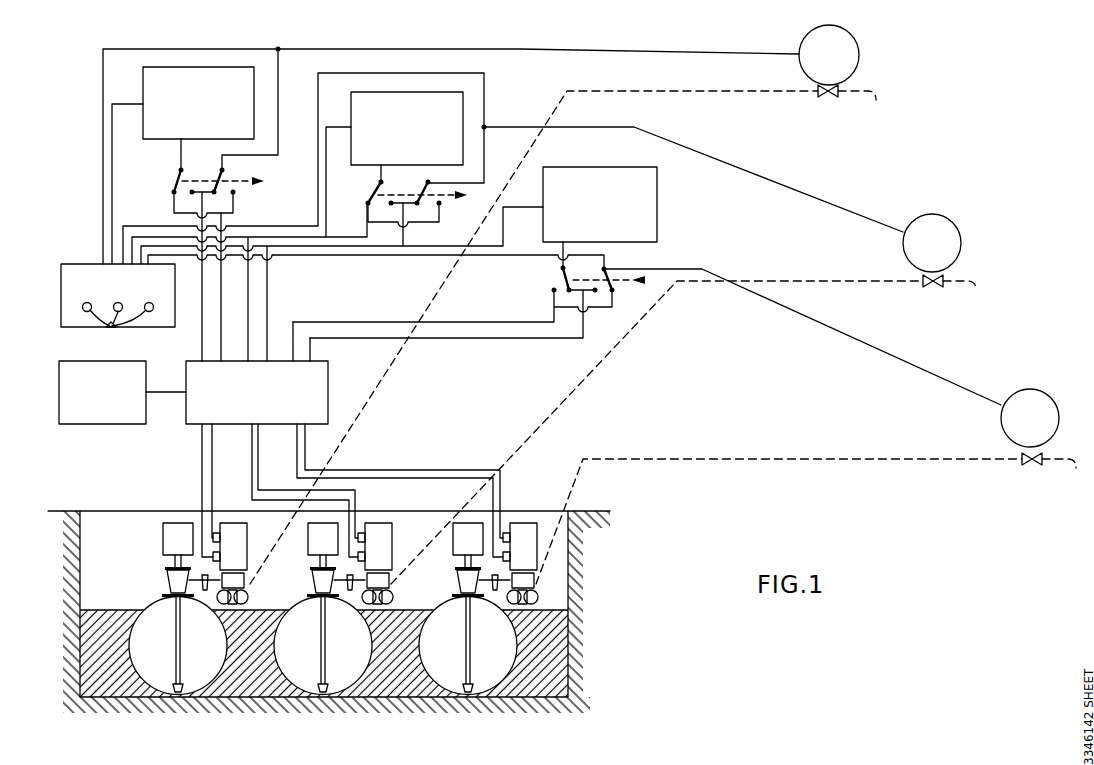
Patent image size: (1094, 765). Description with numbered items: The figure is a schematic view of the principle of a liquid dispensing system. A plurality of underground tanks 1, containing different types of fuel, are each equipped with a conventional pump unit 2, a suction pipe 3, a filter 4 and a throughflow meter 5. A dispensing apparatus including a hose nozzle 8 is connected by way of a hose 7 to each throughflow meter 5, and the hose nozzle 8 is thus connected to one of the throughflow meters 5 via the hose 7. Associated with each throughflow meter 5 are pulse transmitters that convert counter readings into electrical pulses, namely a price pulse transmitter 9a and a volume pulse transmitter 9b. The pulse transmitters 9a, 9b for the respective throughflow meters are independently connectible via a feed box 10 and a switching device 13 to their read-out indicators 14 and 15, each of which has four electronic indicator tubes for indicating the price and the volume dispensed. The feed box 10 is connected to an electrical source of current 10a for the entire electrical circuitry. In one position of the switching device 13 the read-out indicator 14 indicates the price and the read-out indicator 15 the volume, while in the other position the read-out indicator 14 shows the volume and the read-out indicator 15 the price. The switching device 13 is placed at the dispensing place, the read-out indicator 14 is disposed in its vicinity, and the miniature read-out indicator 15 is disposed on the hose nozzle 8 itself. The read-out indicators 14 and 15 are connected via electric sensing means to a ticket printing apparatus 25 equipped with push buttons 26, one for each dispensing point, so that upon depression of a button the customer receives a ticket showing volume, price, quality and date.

The underground tank 1 is at (150, 603).
The pump unit 2 is at (163, 538).
The suction pipe 3 is at (181, 645).
The filter 4 is at (203, 592).
The throughflow meter 5 is at (246, 582).
The hose 7 is at (797, 96).
The hose nozzle 8 is at (826, 97).
The price pulse transmitter 9a is at (509, 533).
The volume pulse transmitter 9b is at (513, 553).
The feed box 10 is at (197, 412).
The electrical source of current 10a is at (86, 412).
The switching device 13 is at (187, 200).
The read-out indicator 14 is at (212, 115).
The read-out indicator 15 is at (853, 62).
The ticket printing apparatus 25 is at (75, 274).
The push buttons 26 is at (118, 329).